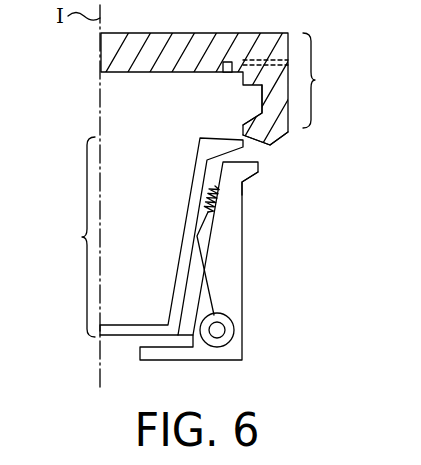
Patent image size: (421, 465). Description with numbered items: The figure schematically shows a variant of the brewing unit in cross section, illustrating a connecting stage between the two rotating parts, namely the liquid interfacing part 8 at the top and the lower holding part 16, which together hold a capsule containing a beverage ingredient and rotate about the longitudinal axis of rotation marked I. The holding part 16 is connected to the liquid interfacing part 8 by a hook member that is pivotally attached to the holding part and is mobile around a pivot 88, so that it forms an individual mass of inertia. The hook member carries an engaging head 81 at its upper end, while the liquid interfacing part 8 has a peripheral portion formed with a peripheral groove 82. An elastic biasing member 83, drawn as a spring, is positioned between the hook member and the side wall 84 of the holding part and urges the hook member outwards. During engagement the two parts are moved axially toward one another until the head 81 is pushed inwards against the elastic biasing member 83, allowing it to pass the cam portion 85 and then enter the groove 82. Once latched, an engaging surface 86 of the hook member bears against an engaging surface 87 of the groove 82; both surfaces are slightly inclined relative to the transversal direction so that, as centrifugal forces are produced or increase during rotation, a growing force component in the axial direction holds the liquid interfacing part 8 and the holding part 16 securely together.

The liquid interfacing part 8 is at (319, 80).
The holding part 16 is at (73, 237).
The engaging head 81 is at (252, 168).
The peripheral groove 82 is at (265, 98).
The elastic biasing member 83 is at (203, 198).
The side wall 84 is at (185, 255).
The cam portion 85 is at (280, 137).
The engaging surface 86 is at (247, 187).
The engaging surface 87 is at (252, 115).
The pivot 88 is at (225, 330).